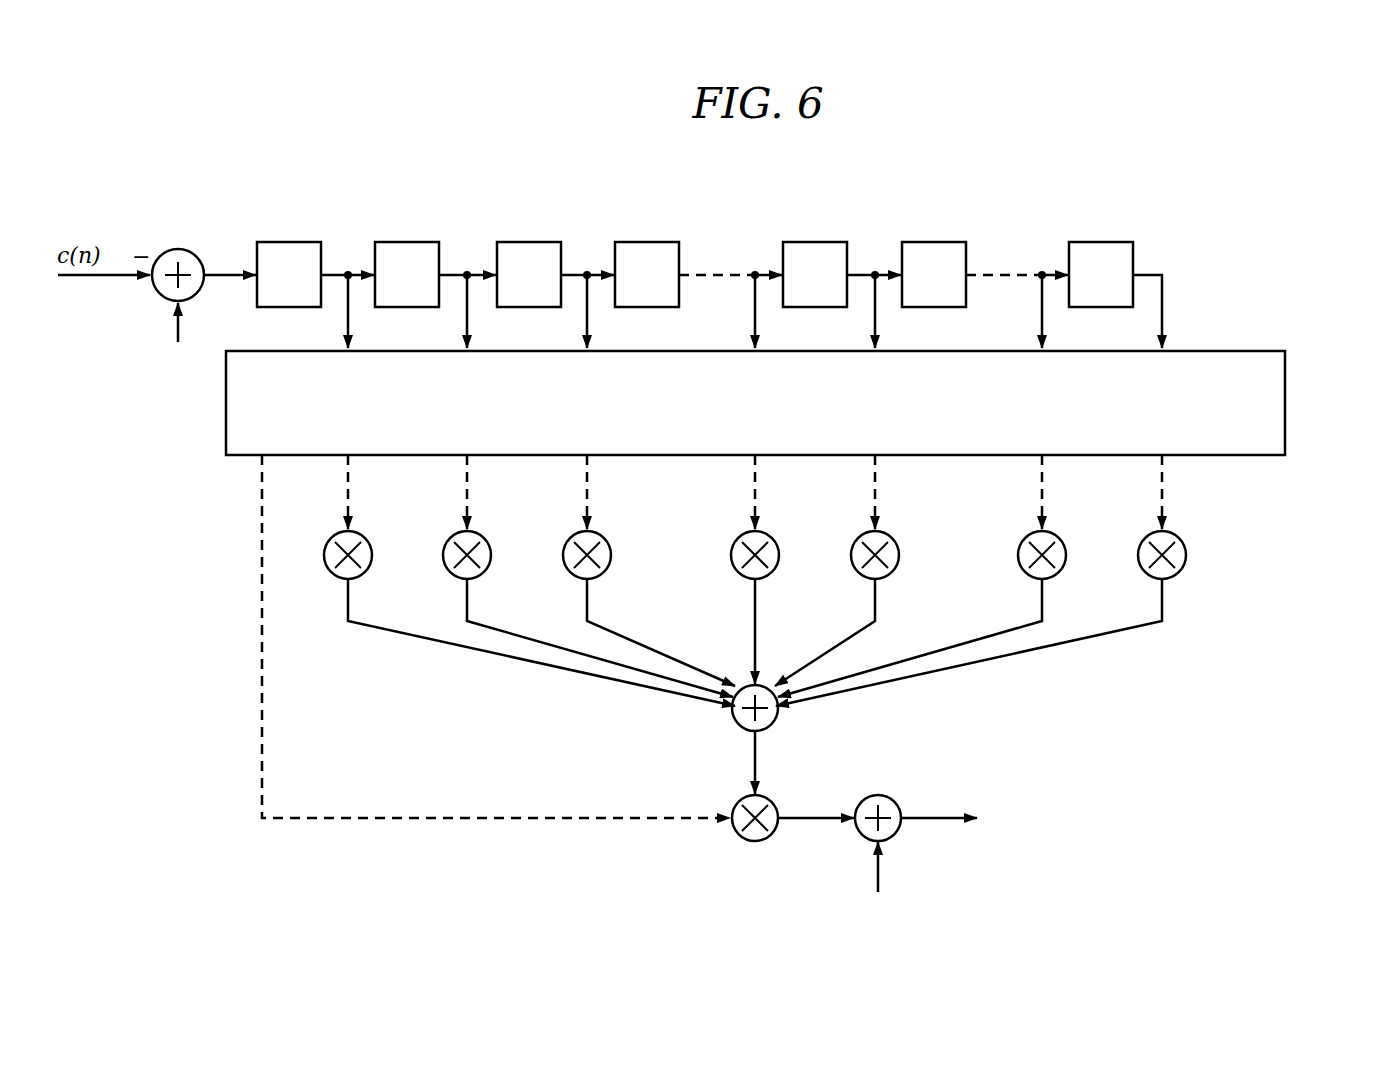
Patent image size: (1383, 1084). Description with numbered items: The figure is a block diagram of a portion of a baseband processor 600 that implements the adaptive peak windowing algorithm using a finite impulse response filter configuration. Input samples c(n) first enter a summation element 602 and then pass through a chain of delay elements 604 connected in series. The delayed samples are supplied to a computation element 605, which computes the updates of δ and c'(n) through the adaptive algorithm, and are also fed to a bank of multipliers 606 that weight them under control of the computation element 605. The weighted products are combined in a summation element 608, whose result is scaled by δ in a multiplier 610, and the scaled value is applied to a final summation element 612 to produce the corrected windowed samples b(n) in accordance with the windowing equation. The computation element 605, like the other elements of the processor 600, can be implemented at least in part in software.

The baseband processor 600 is at (1302, 200).
The summation element 602 is at (178, 248).
The delay elements 604 is at (392, 241).
The computation element 605 is at (226, 398).
The multipliers 606 is at (452, 535).
The summation element 608 is at (728, 725).
The multiplier 610 is at (750, 842).
The summation element 612 is at (878, 794).